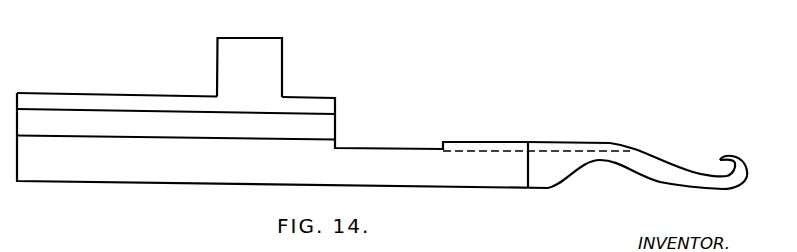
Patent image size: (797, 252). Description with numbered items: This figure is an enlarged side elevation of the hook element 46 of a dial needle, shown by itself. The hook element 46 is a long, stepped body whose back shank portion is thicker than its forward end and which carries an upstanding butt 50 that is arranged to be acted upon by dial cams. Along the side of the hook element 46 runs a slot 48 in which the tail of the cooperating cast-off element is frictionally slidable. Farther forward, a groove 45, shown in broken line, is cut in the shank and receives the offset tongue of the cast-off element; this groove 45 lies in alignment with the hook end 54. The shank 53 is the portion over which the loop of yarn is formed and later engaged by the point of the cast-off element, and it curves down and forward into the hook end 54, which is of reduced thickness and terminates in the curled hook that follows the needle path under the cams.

The groove 45 is at (475, 150).
The hook element 46 is at (227, 168).
The slot 48 is at (323, 127).
The butt 50 is at (257, 48).
The shank 53 is at (620, 160).
The hook end 54 is at (728, 158).